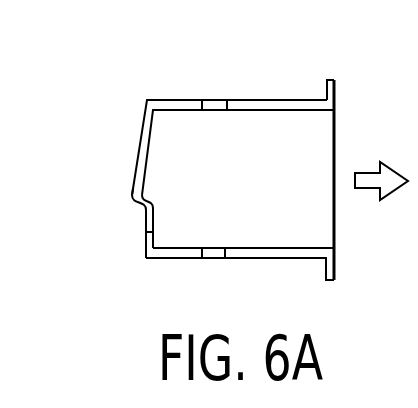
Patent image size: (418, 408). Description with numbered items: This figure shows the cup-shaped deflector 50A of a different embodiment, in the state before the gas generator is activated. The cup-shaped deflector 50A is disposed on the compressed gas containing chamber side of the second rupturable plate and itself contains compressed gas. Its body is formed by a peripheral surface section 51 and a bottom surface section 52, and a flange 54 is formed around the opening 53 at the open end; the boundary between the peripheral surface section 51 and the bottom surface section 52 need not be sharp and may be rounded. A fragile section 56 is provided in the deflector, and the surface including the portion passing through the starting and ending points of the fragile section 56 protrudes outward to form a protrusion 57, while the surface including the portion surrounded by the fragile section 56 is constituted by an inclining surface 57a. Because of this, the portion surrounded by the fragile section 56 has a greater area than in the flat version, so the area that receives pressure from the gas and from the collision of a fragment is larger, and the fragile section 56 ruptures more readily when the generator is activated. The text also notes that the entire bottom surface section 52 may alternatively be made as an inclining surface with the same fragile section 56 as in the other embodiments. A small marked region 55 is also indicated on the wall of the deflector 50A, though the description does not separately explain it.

The cup-shaped deflector 50A is at (213, 166).
The peripheral surface section 51 is at (182, 260).
The bottom surface section 52 is at (147, 110).
The opening 53 is at (335, 227).
The flange 54 is at (337, 88).
The engagement portion 55 is at (213, 103).
The fragile section 56 is at (146, 232).
The protrusion 57 is at (134, 205).
The inclining surface 57a is at (131, 194).